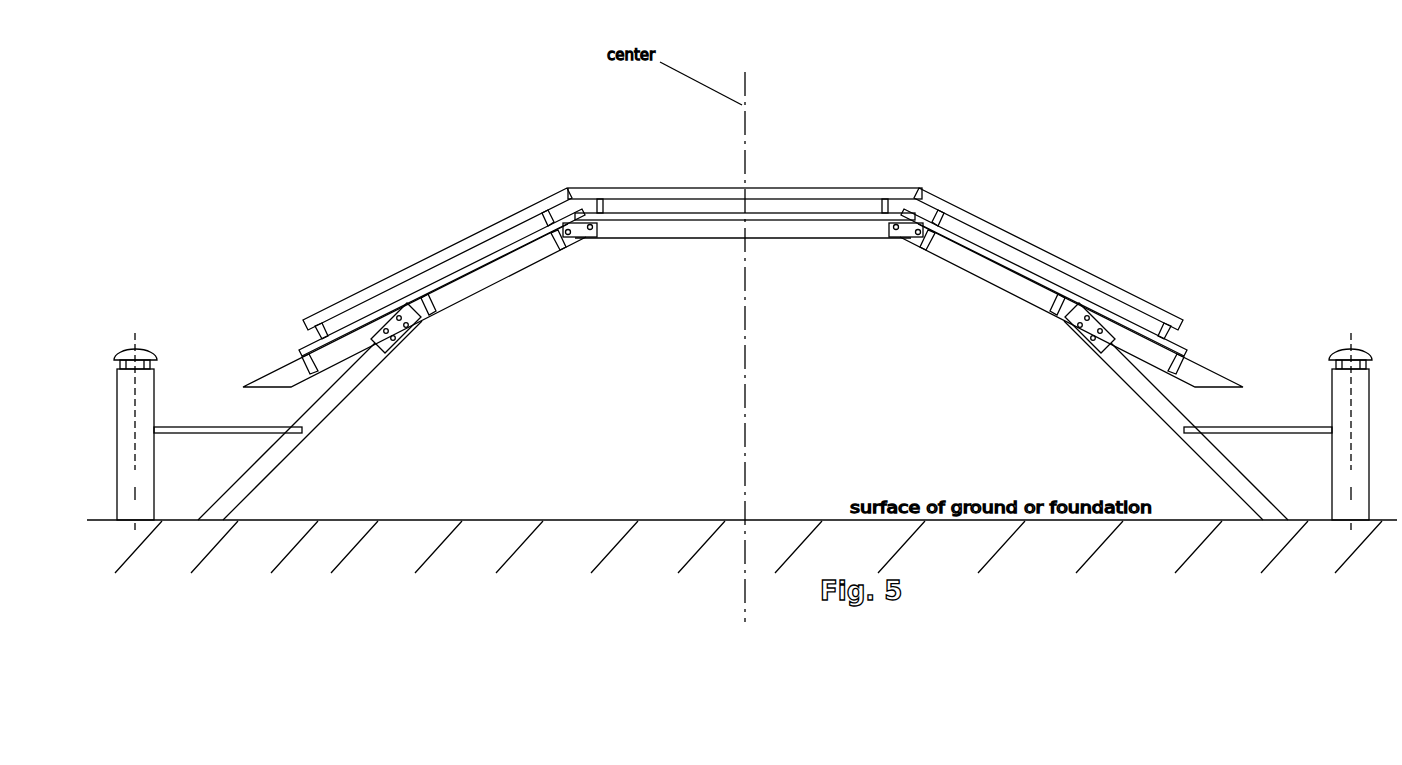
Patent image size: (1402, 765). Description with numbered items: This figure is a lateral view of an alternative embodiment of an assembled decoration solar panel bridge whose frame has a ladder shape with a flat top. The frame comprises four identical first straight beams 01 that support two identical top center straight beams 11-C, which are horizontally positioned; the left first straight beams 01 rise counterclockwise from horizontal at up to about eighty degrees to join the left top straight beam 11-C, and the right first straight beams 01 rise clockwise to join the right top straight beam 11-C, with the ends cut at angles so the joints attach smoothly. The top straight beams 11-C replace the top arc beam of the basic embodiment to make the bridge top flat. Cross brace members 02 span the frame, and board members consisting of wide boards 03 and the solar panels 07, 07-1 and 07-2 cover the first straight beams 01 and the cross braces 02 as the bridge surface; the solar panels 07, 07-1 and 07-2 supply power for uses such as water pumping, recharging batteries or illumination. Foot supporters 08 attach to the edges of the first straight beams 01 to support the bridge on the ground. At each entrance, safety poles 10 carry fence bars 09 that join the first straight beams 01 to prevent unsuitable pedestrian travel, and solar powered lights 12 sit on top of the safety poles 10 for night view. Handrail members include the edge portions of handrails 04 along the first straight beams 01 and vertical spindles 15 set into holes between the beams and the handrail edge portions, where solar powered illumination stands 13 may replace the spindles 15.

The first straight beam 01 is at (308, 342).
The cross brace member 02 is at (513, 218).
The wide board 03 is at (467, 263).
The edge portion of handrail 04 is at (617, 193).
The solar panel 07 is at (816, 212).
The solar panel 07-1 is at (979, 247).
The solar panel 07-2 is at (1060, 293).
The foot supporter 08 is at (1160, 397).
The fence bar 09 is at (1247, 427).
The safety pole 10 is at (1337, 397).
The top center straight beam 11-C is at (675, 230).
The solar powered light 12 is at (1357, 348).
The solar powered illumination stand 13 is at (938, 203).
The vertical spindle of handrail 15 is at (887, 198).